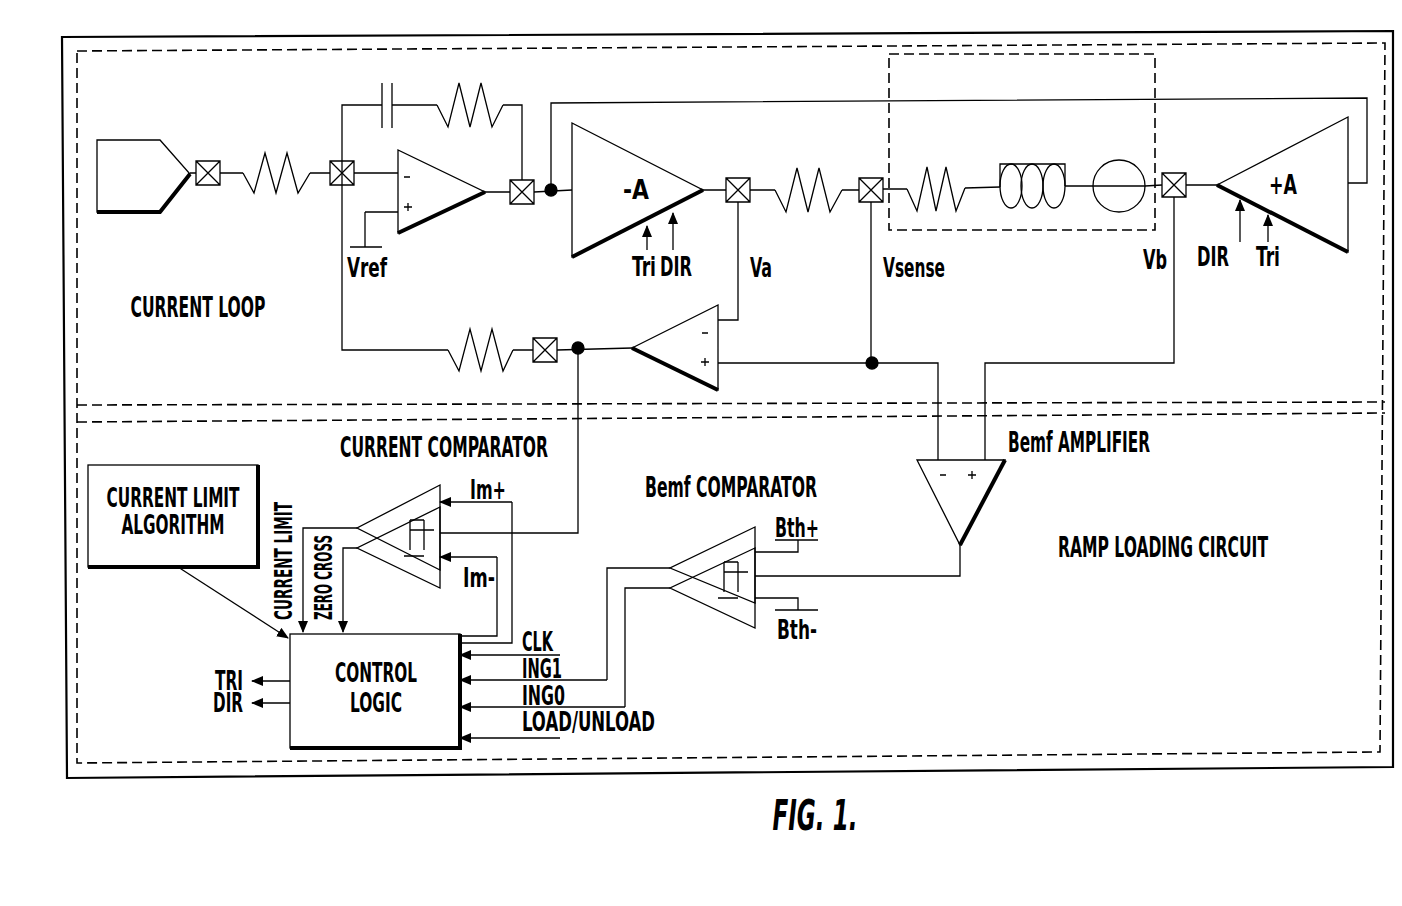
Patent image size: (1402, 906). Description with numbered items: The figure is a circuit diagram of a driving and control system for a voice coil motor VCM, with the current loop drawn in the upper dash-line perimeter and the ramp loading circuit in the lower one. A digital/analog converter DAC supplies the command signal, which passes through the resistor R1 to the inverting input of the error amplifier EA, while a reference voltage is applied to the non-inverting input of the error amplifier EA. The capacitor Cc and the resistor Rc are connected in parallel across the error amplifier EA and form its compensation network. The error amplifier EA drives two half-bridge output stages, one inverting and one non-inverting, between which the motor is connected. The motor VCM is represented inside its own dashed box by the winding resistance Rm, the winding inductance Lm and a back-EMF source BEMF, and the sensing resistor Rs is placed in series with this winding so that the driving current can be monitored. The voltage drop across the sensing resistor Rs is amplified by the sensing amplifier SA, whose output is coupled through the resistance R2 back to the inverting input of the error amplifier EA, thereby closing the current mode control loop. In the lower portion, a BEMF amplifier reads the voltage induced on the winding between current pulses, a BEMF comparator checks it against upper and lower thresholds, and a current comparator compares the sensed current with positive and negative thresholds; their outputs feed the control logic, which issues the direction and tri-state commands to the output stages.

The digital/analog converter DAC is at (143, 176).
The resistor R1 is at (276, 155).
The error amplifier EA is at (441, 191).
The compensation capacitor Cc is at (388, 89).
The compensation resistor Rc is at (470, 88).
The sensing resistor Rs is at (808, 170).
The voice coil motor VCM is at (1022, 142).
The motor winding resistance Rm is at (936, 169).
The motor winding inductance Lm is at (1032, 170).
The back-EMF voltage source BEMF is at (1119, 172).
The sensing amplifier SA is at (675, 347).
The feedback resistance R2 is at (480, 332).